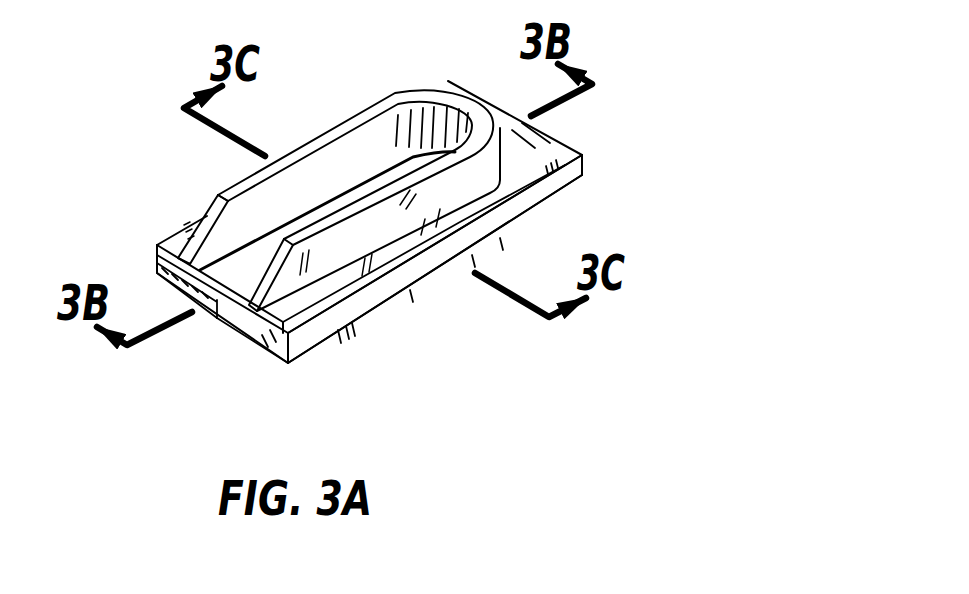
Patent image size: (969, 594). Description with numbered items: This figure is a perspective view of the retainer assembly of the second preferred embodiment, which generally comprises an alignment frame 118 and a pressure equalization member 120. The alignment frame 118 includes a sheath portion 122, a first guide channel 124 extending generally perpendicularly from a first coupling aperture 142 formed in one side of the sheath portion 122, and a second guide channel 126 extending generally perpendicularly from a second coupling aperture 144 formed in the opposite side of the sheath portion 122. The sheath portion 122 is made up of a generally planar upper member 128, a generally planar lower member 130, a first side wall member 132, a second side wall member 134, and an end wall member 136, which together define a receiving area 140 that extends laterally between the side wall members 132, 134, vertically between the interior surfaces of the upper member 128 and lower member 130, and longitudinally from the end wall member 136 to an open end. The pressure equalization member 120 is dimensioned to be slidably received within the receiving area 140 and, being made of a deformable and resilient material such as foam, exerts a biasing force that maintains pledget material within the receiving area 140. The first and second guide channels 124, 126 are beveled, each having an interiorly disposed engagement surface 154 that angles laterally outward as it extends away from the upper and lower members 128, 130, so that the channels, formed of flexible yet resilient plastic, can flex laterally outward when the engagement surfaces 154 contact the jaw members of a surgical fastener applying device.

The alignment frame 118 is at (556, 149).
The pressure equalization member 120 is at (218, 193).
The sheath portion 122 is at (390, 281).
The first guide channel 124 is at (362, 113).
The second guide channel 126 is at (367, 328).
The upper member 128 is at (533, 147).
The lower member 130 is at (157, 275).
The first side wall member 132 is at (160, 263).
The second side wall member 134 is at (550, 196).
The end wall member 136 is at (587, 171).
The receiving area 140 is at (242, 329).
The first coupling aperture 142 is at (306, 208).
The second coupling aperture 144 is at (201, 299).
The engagement surface 154 is at (404, 127).